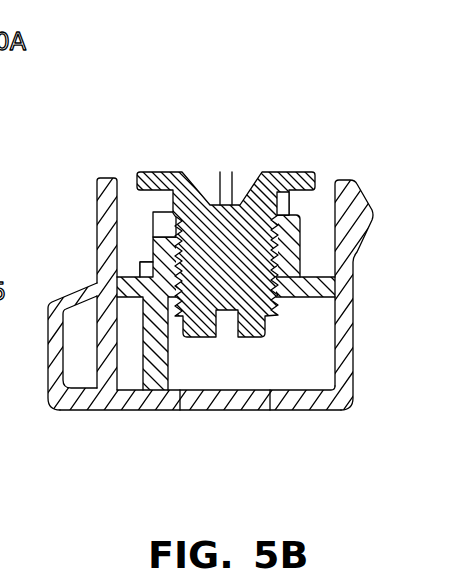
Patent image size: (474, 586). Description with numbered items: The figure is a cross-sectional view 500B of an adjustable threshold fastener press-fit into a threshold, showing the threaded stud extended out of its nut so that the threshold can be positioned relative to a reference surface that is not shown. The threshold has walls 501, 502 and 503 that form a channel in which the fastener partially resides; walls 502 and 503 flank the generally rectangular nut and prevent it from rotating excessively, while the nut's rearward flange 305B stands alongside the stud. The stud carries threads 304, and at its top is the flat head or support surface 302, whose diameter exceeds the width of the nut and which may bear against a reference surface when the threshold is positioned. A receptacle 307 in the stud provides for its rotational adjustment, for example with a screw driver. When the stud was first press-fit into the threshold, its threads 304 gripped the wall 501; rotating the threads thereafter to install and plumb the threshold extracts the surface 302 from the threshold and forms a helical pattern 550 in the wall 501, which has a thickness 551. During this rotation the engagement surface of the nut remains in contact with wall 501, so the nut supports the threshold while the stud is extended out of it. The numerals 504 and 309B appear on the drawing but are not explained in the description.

The cross-sectional view 500B is at (294, 70).
The wall 501 is at (133, 278).
The wall 502 is at (345, 180).
The wall 503 is at (107, 180).
The hook 504 is at (78, 292).
The head or support surface 302 is at (207, 170).
The threads 304 is at (277, 303).
The rearward flange 305B is at (293, 238).
The receptacle 307 is at (226, 333).
The washer 309B is at (287, 195).
The helical pattern 550 is at (149, 286).
The thickness 551 is at (175, 274).